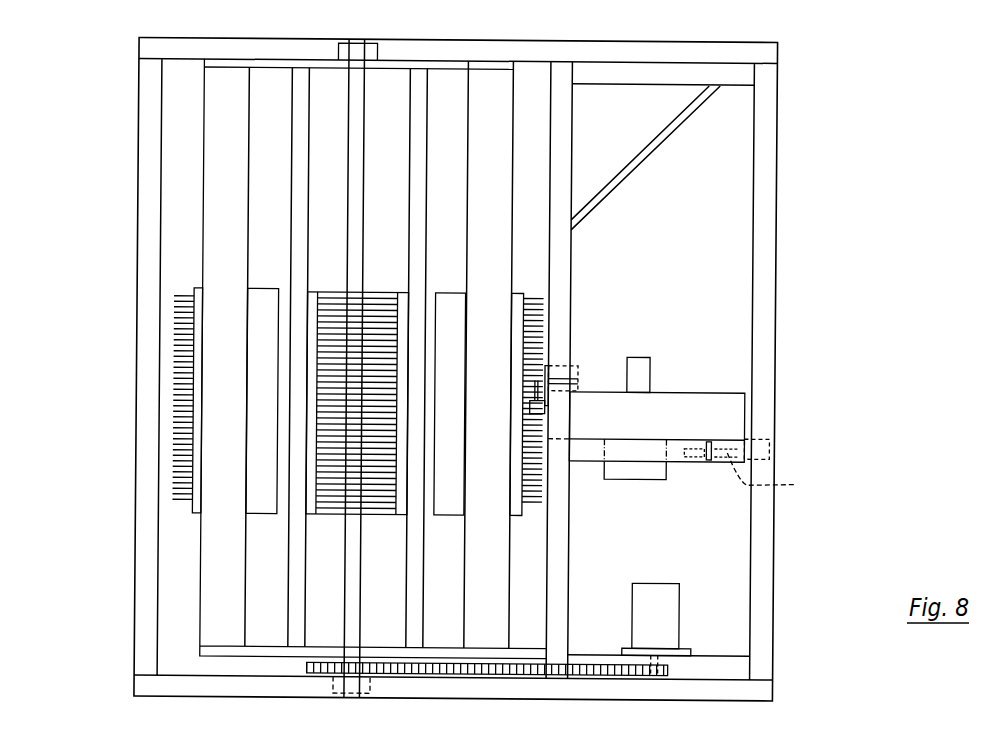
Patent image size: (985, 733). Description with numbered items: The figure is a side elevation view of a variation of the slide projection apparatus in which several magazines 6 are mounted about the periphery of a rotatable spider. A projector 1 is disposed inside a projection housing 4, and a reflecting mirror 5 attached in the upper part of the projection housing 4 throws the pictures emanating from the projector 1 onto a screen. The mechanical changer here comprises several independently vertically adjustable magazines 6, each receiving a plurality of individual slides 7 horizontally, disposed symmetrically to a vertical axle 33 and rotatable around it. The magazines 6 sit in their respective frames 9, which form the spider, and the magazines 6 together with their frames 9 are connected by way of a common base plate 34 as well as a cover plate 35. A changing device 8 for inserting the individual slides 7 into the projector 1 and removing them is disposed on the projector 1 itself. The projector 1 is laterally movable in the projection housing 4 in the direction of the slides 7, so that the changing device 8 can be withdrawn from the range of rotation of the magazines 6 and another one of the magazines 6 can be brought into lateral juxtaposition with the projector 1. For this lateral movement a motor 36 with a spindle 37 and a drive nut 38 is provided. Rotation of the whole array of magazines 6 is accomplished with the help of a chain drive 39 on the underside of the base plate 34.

The projector 1 is at (732, 413).
The projection housing 4 is at (766, 285).
The reflecting mirror 5 is at (681, 124).
The magazine 6 is at (274, 394).
The slide 7 is at (531, 299).
The changing device 8 is at (575, 372).
The frame 9 is at (496, 107).
The vertical axle 33 is at (358, 96).
The base plate 34 is at (267, 650).
The cover plate 35 is at (269, 64).
The motor 36 is at (767, 430).
The spindle 37 is at (779, 477).
The drive nut 38 is at (708, 456).
The chain drive 39 is at (588, 654).